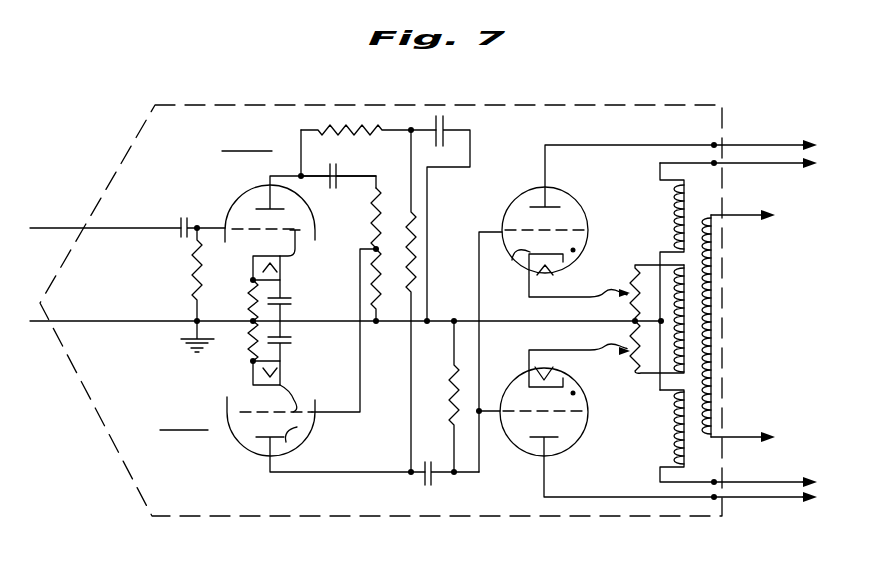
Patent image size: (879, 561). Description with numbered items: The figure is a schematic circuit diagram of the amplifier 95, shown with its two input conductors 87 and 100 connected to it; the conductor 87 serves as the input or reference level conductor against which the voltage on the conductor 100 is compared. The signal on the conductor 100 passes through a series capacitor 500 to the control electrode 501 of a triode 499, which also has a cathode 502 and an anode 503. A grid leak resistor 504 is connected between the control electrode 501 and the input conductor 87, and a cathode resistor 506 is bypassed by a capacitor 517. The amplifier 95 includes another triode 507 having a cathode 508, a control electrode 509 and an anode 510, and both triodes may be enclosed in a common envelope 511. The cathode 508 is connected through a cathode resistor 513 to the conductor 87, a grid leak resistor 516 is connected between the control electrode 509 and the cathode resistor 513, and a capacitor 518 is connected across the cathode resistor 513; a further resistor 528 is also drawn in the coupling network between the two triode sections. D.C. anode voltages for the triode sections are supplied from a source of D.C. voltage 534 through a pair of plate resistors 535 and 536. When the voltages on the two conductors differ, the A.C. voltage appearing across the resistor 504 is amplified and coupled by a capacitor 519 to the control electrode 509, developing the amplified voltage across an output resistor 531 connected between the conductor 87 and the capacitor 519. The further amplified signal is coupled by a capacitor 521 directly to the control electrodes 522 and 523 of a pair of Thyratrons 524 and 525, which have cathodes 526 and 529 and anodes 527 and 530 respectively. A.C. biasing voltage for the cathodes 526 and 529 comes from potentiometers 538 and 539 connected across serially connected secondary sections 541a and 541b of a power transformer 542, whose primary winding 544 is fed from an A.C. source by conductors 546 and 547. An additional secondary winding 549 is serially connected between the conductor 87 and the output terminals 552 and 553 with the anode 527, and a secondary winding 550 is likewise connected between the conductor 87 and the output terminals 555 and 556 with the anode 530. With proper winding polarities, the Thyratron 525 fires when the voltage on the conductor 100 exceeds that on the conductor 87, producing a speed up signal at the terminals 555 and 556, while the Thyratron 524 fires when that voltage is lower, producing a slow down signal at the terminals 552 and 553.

The amplifier 95 is at (265, 106).
The input conductor 100 is at (128, 226).
The input conductor 87 is at (118, 305).
The triode 499 is at (226, 210).
The series capacitor 500 is at (183, 215).
The control electrode 501 is at (294, 244).
The cathode 502 is at (282, 268).
The anode 503 is at (258, 230).
The grid leak resistor 504 is at (192, 280).
The cathode resistor 506 is at (248, 299).
The triode 507 is at (315, 420).
The cathode 508 is at (284, 370).
The control electrode 509 is at (297, 397).
The anode 510 is at (297, 432).
The common envelope 511 is at (243, 452).
The cathode resistor 513 is at (248, 332).
The grid leak resistor 516 is at (360, 265).
The capacitor 517 is at (291, 300).
The capacitor 518 is at (291, 340).
The capacitor 519 is at (338, 170).
The capacitor 521 is at (430, 486).
The control electrode 522 is at (480, 232).
The control electrode 523 is at (490, 408).
The Thyratron 524 is at (580, 207).
The Thyratron 525 is at (588, 418).
The cathode 526 is at (523, 262).
The anode 527 is at (541, 195).
The resistor 528 is at (372, 208).
The cathode 529 is at (566, 355).
The anode 530 is at (557, 440).
The output resistor 531 is at (450, 385).
The source of D.C. voltage 534 is at (447, 118).
The plate resistor 535 is at (350, 128).
The plate resistor 536 is at (415, 248).
The potentiometer 538 is at (630, 285).
The potentiometer 539 is at (632, 374).
The secondary winding section 541a is at (688, 292).
The secondary winding section 541b is at (688, 353).
The power transformer 542 is at (691, 277).
The primary winding 544 is at (712, 400).
The conductor 546 is at (742, 214).
The conductor 547 is at (736, 436).
The secondary winding 549 is at (674, 212).
The secondary winding 550 is at (674, 442).
The output terminal 552 is at (717, 142).
The output terminal 553 is at (717, 166).
The output terminal 555 is at (717, 481).
The output terminal 556 is at (713, 500).